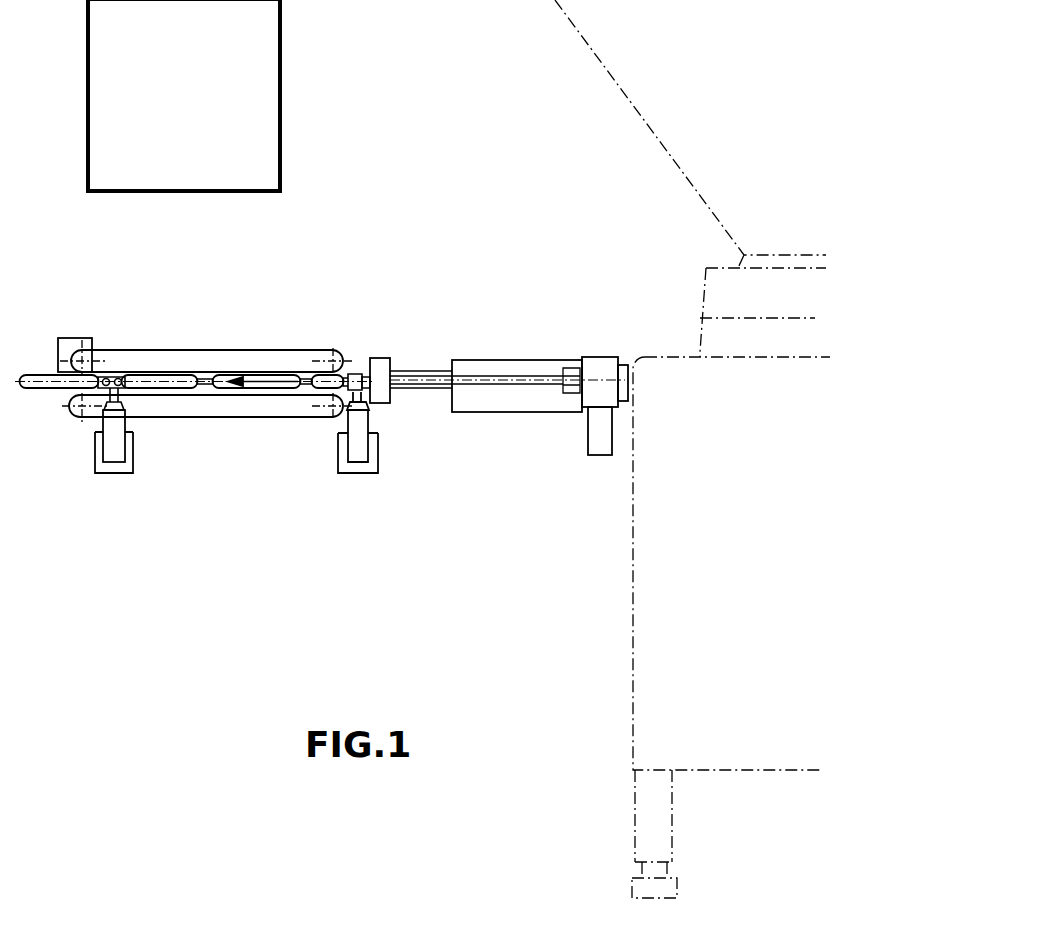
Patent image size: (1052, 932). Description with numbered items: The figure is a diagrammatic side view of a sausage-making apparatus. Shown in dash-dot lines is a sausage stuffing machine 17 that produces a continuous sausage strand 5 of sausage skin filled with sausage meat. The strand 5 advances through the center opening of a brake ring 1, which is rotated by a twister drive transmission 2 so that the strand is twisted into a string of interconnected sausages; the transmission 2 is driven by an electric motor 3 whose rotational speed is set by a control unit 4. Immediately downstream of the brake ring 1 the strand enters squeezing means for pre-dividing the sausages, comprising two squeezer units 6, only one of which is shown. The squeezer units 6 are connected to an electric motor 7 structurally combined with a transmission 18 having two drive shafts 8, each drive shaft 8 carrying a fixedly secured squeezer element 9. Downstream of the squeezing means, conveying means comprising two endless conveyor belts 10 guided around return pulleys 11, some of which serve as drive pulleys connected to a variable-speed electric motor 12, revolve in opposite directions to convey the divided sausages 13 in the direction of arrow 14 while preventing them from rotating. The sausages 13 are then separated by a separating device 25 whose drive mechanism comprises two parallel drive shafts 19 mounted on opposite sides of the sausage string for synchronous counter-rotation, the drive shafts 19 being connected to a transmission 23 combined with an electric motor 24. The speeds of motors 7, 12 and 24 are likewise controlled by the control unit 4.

The brake ring 1 is at (376, 358).
The twister drive transmission 2 is at (597, 360).
The electric motor 3 is at (598, 425).
The control unit 4 is at (282, 96).
The sausage strand 5 is at (367, 372).
The squeezer unit 6 is at (359, 480).
The electric motor 7 is at (360, 440).
The drive shaft 8 is at (392, 397).
The squeezer element 9 is at (355, 372).
The endless conveyor belt 10 is at (220, 348).
The return pulley 11 is at (92, 348).
The variable-speed electric motor 12 is at (82, 347).
The sausage 13 is at (146, 376).
The arrow 14 is at (290, 390).
The sausage stuffing machine 17 is at (744, 597).
The transmission 18 is at (360, 472).
The drive shaft 19 is at (123, 398).
The transmission 23 is at (118, 440).
The electric motor 24 is at (105, 475).
The separating device 25 is at (118, 480).